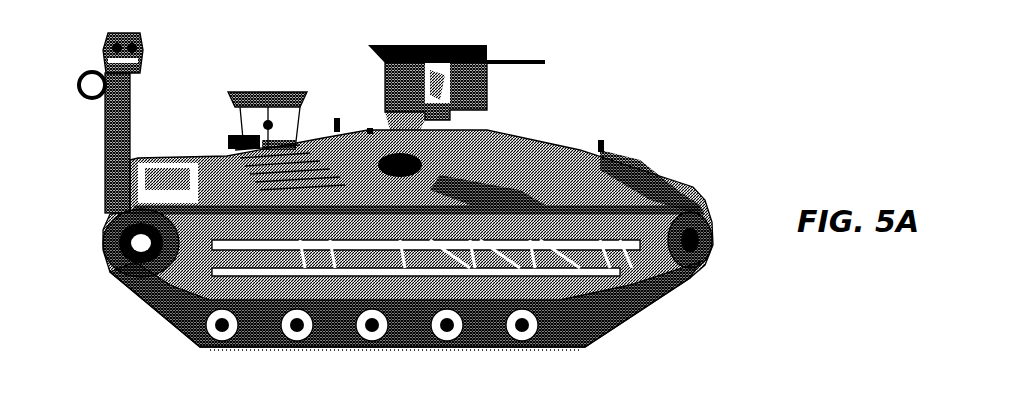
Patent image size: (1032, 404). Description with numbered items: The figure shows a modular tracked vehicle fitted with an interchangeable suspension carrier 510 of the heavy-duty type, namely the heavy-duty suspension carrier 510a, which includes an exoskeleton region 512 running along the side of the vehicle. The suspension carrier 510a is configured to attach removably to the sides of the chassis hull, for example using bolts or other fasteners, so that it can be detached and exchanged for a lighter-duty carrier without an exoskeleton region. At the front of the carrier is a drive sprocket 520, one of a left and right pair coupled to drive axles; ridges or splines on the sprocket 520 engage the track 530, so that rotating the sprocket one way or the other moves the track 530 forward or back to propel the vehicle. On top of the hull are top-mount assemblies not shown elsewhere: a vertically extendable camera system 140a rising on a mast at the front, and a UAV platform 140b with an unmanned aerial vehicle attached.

The suspension carrier 510 is at (452, 219).
The heavy-duty suspension carrier 510a is at (655, 318).
The exoskeleton region 512 is at (578, 272).
The drive sprocket 520 is at (112, 267).
The track 530 is at (167, 312).
The vertically extendable camera system 140a is at (108, 148).
The UAV platform 140b is at (262, 82).